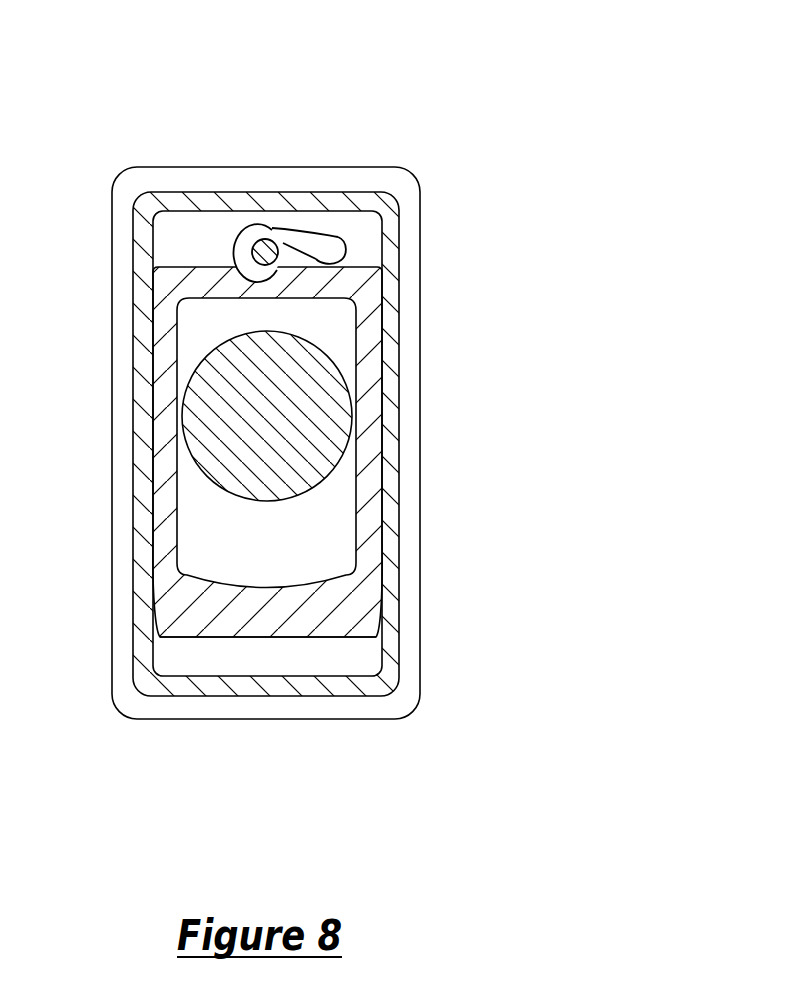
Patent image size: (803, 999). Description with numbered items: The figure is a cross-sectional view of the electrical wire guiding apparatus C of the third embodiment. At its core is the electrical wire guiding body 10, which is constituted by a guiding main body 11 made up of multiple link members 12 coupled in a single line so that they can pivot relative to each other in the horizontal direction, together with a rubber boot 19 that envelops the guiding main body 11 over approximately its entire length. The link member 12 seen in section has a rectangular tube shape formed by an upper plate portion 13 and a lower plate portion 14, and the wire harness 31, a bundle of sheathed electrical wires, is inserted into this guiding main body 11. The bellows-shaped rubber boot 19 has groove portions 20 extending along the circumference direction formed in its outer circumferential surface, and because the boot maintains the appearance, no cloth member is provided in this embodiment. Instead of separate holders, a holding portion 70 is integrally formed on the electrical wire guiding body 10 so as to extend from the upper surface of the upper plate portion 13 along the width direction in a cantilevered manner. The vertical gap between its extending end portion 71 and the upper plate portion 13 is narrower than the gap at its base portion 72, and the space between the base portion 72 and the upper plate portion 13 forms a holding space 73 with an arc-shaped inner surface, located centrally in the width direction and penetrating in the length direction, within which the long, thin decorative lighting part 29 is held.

The electrical wire guiding apparatus C is at (436, 55).
The electrical wire guiding body 10 is at (277, 439).
The guiding main body 11 is at (384, 140).
The link member 12 is at (396, 360).
The upper plate portion 13 is at (205, 277).
The lower plate portion 14 is at (258, 623).
The rubber boot 19 is at (387, 201).
The groove portion 20 is at (277, 479).
The decorative lighting part 29 is at (266, 244).
The wire harness 31 is at (243, 450).
The holding portion 70 is at (288, 232).
The extending end portion 71 is at (343, 238).
The base portion 72 is at (252, 225).
The holding space 73 is at (234, 275).